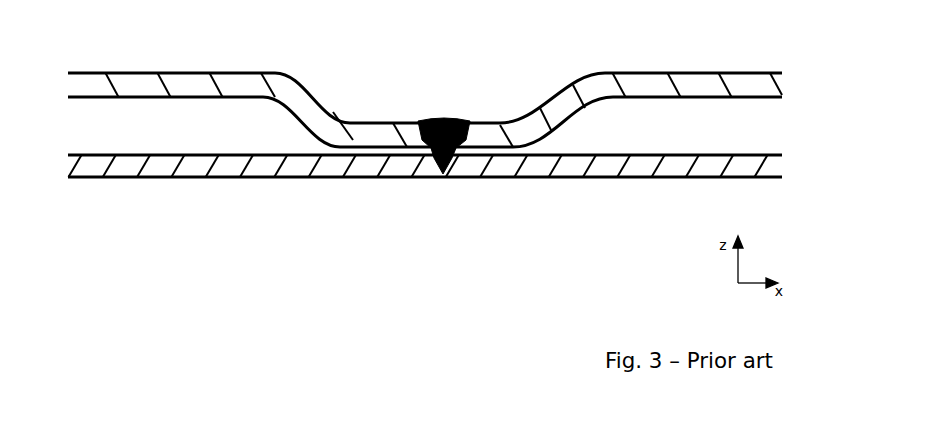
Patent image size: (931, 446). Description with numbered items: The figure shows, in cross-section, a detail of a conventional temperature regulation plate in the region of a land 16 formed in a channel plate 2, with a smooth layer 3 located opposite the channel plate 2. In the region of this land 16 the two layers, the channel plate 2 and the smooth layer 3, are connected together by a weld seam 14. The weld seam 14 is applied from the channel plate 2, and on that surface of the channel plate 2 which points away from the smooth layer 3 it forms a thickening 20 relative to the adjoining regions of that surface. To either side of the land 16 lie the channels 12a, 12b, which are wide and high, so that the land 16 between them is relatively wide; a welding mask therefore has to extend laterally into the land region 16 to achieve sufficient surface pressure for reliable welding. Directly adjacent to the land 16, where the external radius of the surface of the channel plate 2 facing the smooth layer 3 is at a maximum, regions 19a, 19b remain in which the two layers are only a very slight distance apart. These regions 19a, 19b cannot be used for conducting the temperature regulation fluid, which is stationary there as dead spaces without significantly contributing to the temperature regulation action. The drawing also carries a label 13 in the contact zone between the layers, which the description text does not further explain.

The channel plate 2 is at (690, 82).
The smooth layer 3 is at (630, 172).
The channel 12a is at (121, 141).
The channel 12b is at (725, 137).
The contact surface of the joggle 13 is at (373, 157).
The weld seam 14 is at (443, 174).
The land 16 is at (388, 137).
The region 19a is at (340, 151).
The region 19b is at (533, 153).
The thickening 20 is at (444, 118).